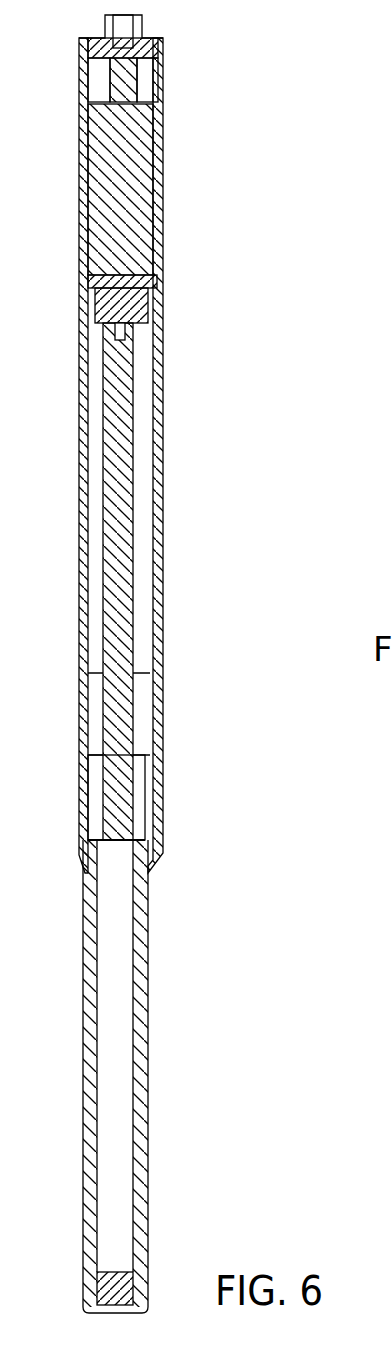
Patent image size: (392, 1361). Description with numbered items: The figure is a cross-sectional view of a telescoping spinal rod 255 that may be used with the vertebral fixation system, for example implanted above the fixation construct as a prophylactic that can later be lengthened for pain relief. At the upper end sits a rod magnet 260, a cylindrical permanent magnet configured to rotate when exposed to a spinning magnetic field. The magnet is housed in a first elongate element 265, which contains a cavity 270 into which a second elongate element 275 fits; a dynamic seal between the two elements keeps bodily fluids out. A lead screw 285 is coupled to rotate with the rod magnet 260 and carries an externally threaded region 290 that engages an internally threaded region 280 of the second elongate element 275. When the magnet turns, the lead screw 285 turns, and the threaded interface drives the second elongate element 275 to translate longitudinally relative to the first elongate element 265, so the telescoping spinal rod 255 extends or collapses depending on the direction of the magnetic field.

The telescoping spinal rod 255 is at (234, 94).
The rod magnet 260 is at (140, 215).
The first elongate element 265 is at (163, 367).
The cavity 270 is at (163, 528).
The lead screw 285 is at (137, 470).
The externally threaded region 290 is at (157, 800).
The internally threaded region 280 is at (142, 834).
The second elongate element 275 is at (146, 938).